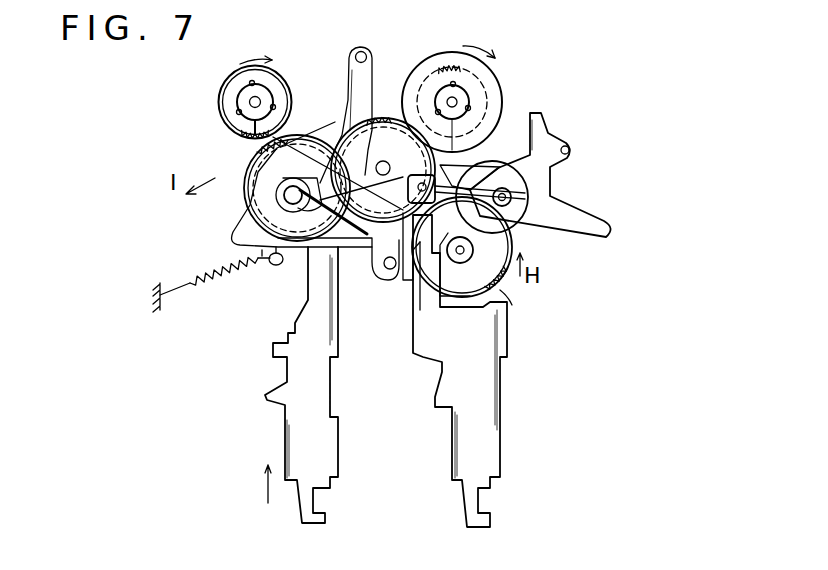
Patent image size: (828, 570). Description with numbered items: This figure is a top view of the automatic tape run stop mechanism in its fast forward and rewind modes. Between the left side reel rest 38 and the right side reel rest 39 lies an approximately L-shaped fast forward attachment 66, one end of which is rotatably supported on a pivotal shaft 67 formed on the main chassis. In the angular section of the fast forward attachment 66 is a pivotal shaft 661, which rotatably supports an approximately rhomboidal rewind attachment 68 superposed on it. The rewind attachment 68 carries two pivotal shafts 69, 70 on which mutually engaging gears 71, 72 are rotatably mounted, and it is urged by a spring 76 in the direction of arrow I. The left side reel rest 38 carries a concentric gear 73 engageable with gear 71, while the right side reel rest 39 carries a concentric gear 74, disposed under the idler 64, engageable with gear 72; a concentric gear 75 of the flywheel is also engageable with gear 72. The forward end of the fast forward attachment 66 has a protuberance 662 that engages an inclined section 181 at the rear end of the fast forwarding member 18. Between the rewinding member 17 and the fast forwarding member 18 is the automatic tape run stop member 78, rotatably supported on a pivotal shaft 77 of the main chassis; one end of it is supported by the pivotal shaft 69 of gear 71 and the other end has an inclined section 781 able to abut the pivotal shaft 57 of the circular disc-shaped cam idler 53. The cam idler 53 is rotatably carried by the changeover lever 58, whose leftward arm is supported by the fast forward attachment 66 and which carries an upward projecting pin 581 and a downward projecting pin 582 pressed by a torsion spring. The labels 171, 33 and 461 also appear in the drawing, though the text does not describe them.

The left side reel rest 38 is at (232, 88).
The concentric gear 73 is at (215, 120).
The fast forward attachment 66 is at (350, 78).
The pivotal shaft 67 is at (374, 58).
The gear 72 is at (380, 118).
The concentric gear 74 is at (452, 70).
The right side reel rest 39 is at (466, 96).
The idler 64 is at (503, 100).
The pivotal shaft 69 is at (275, 156).
The gear 71 is at (254, 162).
The upward projecting pin 581 is at (393, 176).
The pivotal shaft 70 is at (377, 172).
The downward projecting pin 582 is at (567, 146).
The inclined section 781 is at (552, 177).
The changeover lever 58 is at (591, 223).
The pivotal shaft 57 is at (512, 200).
The rewind attachment 68 is at (248, 222).
The projection 171 is at (260, 250).
The pivotal shaft 661 is at (277, 265).
The spring 76 is at (221, 281).
The automatic tape run stop member 78 is at (372, 250).
The pivotal shaft 77 is at (390, 272).
The protuberance 662 is at (425, 250).
The inclined section 181 is at (440, 285).
The shaft 33 is at (474, 255).
The gear teeth 461 is at (473, 267).
The cam idler 53 is at (510, 226).
The concentric gear 75 is at (505, 292).
The rewinding member 17 is at (284, 436).
The fast forwarding member 18 is at (502, 425).